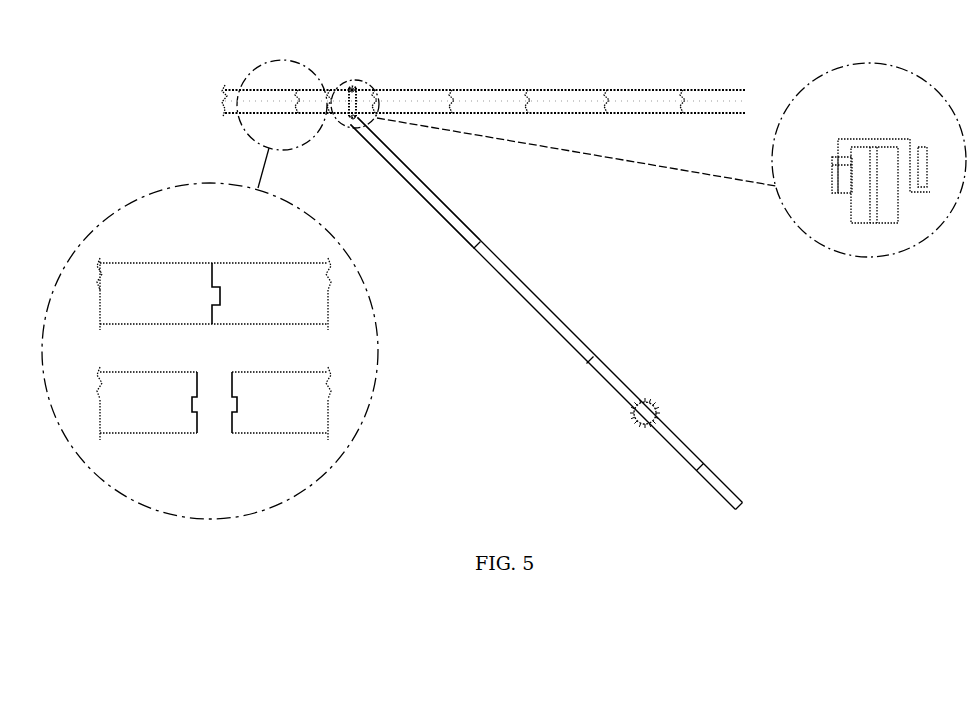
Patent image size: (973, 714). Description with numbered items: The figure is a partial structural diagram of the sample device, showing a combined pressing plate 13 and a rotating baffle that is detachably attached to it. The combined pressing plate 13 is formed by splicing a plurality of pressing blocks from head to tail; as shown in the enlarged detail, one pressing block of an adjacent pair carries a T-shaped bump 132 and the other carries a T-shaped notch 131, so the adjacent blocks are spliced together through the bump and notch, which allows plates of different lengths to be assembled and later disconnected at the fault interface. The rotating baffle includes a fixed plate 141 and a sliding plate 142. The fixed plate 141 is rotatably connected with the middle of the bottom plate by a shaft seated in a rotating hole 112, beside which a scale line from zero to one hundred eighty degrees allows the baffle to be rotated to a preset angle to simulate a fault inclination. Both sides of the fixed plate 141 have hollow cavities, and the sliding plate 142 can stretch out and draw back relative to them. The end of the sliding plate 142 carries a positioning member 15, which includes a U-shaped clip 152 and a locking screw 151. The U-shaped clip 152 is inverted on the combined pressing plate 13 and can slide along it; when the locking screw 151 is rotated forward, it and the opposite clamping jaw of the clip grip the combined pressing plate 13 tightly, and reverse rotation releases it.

The combined pressing plate 13 is at (476, 97).
The positioning member 15 is at (356, 84).
The locking screw 151 is at (352, 90).
The U-shaped clip 152 is at (352, 117).
The T-shaped notch 131 is at (191, 400).
The T-shaped bump 132 is at (229, 400).
The fixed plate 141 is at (541, 303).
The sliding plate 142 is at (432, 200).
The rotating hole 112 is at (657, 407).